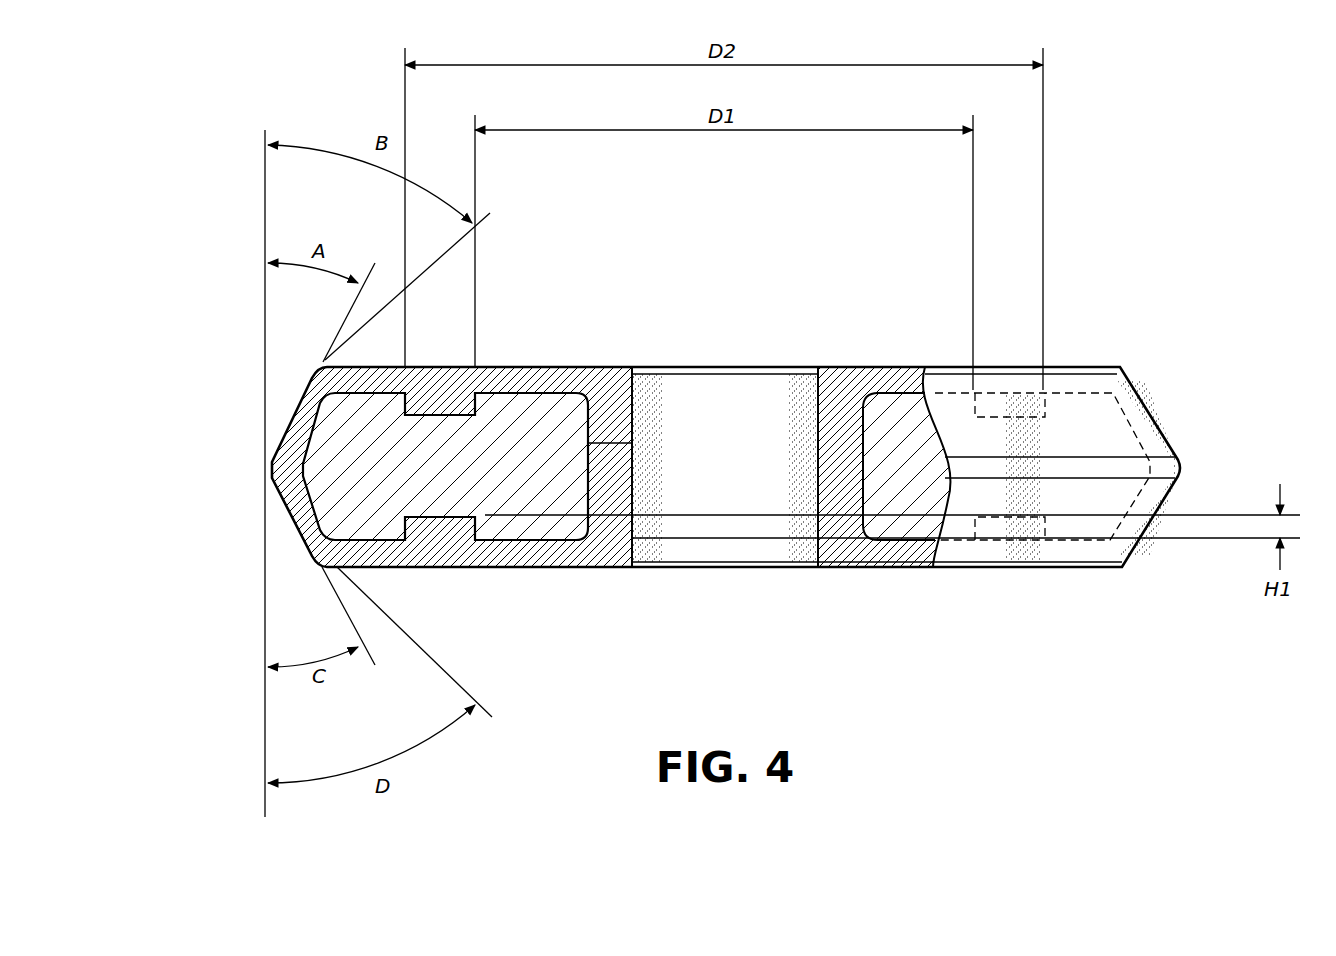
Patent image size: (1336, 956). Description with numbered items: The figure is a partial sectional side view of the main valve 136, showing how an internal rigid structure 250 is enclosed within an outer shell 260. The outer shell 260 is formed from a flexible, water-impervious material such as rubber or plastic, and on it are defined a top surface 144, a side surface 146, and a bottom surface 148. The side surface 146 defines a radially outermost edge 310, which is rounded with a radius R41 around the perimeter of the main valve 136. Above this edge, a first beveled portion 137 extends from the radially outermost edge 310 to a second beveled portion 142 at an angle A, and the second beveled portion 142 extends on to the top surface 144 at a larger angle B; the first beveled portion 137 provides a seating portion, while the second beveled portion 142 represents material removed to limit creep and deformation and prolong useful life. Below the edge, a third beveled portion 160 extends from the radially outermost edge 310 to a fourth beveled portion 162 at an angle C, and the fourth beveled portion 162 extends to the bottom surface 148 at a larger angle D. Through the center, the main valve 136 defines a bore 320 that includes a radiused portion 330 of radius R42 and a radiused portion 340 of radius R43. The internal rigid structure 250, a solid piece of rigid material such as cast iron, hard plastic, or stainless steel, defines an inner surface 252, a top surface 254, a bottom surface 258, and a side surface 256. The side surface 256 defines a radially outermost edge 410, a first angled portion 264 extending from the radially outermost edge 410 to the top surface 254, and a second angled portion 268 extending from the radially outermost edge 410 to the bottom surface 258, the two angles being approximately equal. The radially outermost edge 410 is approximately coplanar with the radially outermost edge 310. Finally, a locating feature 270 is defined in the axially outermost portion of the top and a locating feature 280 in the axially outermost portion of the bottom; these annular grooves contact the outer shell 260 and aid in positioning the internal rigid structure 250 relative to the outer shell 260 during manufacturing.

The main valve 136 is at (868, 280).
The first beveled portion 137 is at (330, 398).
The second beveled portion 142 is at (353, 398).
The top surface 144 is at (1022, 365).
The side surface 146 is at (1170, 435).
The bottom surface 148 is at (1028, 570).
The third beveled portion 160 is at (305, 527).
The fourth beveled portion 162 is at (318, 567).
The internal rigid structure 250 is at (496, 442).
The inner surface 252 is at (652, 450).
The top surface 254 is at (558, 367).
The side surface 256 is at (305, 385).
The bottom surface 258 is at (528, 567).
The outer shell 260 is at (458, 568).
The first angled portion 264 is at (305, 450).
The second angled portion 268 is at (300, 548).
The locating feature 270 is at (468, 365).
The locating feature 280 is at (423, 567).
The radially outermost edge 310 is at (268, 462).
The bore 320 is at (712, 367).
The radiused portion 330 is at (788, 367).
The radiused portion 340 is at (710, 560).
The radially outermost edge 410 is at (275, 455).
The radius R41 is at (265, 473).
The radius R42 is at (633, 366).
The radius R43 is at (818, 567).